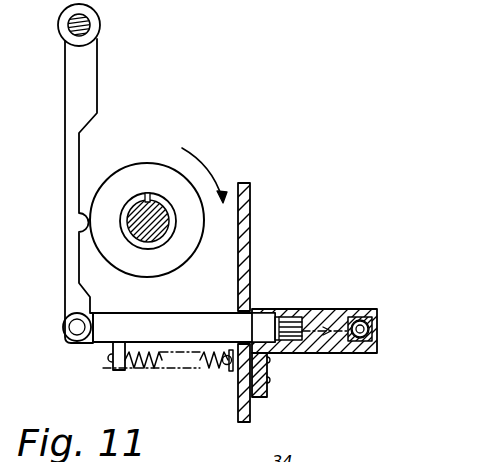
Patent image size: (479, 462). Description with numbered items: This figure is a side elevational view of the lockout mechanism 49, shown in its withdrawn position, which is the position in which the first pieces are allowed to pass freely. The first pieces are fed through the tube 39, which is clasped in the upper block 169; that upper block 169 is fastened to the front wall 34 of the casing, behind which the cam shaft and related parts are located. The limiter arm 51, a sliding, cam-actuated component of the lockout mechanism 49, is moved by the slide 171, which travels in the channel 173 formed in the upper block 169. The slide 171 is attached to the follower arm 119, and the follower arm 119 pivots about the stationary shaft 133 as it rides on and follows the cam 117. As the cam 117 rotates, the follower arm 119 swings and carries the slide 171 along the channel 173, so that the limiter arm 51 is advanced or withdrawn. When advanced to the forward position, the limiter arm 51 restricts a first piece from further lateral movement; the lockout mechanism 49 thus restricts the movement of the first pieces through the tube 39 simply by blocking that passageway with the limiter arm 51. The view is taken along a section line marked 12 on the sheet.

The section line 12- 12 is at (266, 276).
The front wall 34 is at (252, 236).
The tube 39 is at (373, 330).
The lockout mechanism 49 is at (304, 190).
The limiter arm 51 is at (345, 354).
The cam 117 is at (145, 170).
The follower arm 119 is at (65, 166).
The stationary shaft 133 is at (90, 28).
The upper block 169 is at (322, 316).
The slide 171 is at (184, 342).
The channel 173 is at (289, 344).